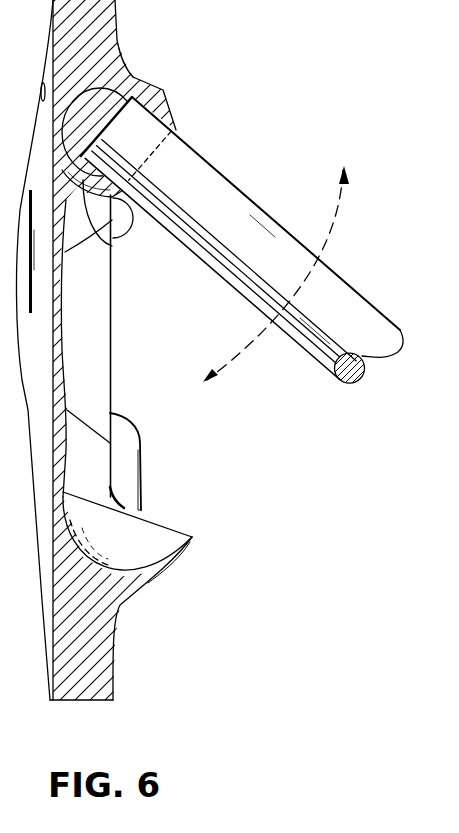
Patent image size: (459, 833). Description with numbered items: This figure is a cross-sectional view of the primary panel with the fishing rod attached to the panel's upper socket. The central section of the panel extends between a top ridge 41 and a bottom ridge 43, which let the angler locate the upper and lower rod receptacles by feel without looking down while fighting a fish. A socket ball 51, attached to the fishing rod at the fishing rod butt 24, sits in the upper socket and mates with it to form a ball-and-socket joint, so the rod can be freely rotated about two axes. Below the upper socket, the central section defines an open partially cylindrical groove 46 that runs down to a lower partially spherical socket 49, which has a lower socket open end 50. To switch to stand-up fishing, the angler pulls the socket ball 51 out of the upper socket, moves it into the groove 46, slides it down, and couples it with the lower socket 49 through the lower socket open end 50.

The top ridge 41 is at (123, 65).
The fishing rod butt 24 is at (145, 128).
The socket ball 51 is at (112, 246).
The open partially cylindrical groove 46 is at (92, 390).
The lower socket open end 50 is at (63, 492).
The lower partially spherical socket 49 is at (158, 534).
The bottom ridge 43 is at (135, 590).